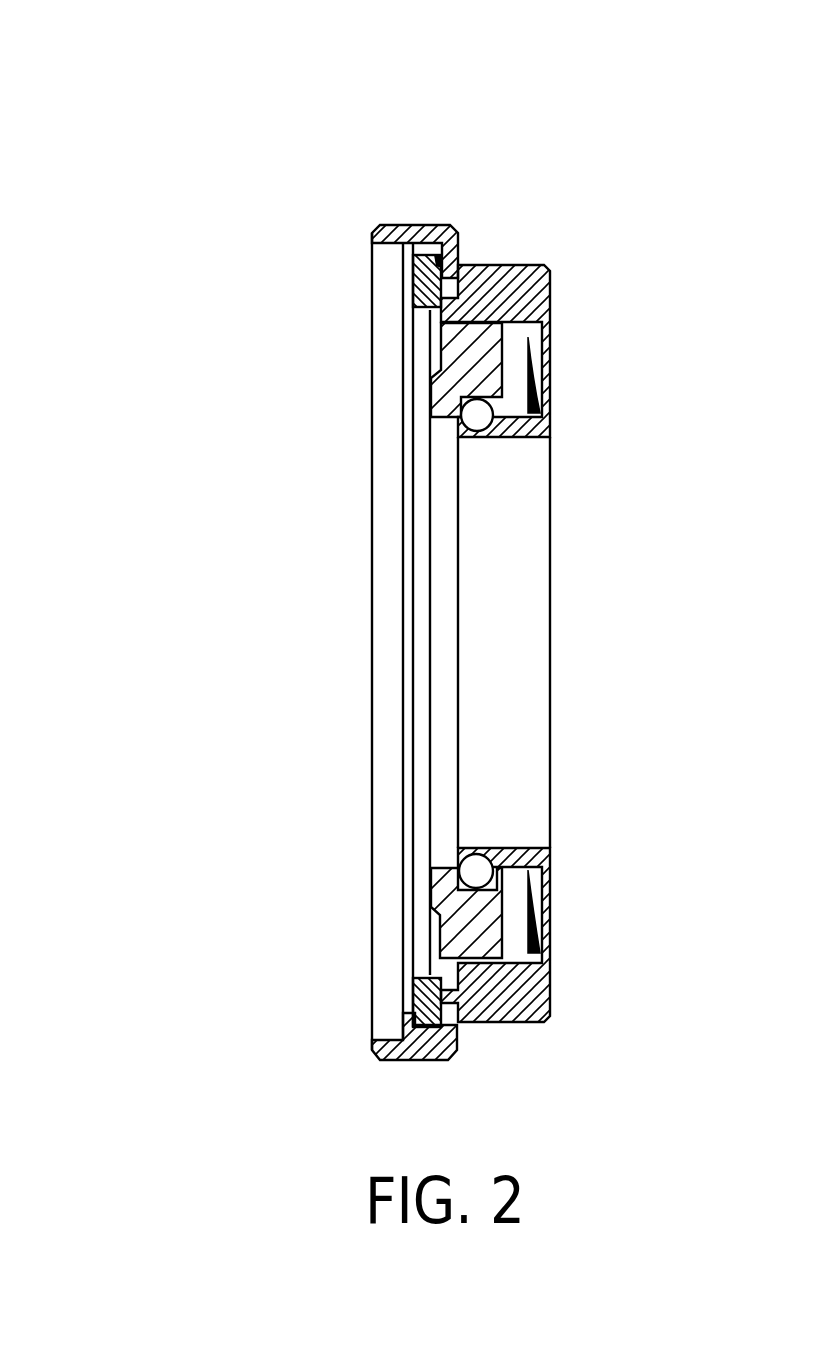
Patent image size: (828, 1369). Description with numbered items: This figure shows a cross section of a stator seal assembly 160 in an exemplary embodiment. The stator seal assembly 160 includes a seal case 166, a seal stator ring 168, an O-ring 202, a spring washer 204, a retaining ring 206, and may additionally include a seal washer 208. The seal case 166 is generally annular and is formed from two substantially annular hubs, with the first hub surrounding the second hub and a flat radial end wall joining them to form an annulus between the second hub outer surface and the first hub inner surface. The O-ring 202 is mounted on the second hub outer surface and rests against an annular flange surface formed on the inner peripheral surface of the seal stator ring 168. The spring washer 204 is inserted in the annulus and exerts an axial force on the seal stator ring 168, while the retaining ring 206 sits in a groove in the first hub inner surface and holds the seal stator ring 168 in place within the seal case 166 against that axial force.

The stator seal assembly 160 is at (203, 126).
The seal case 166 is at (373, 233).
The seal stator ring 168 is at (428, 412).
The O-ring 202 is at (467, 265).
The spring washer 204 is at (541, 387).
The retaining ring 206 is at (427, 258).
The seal washer 208 is at (478, 412).